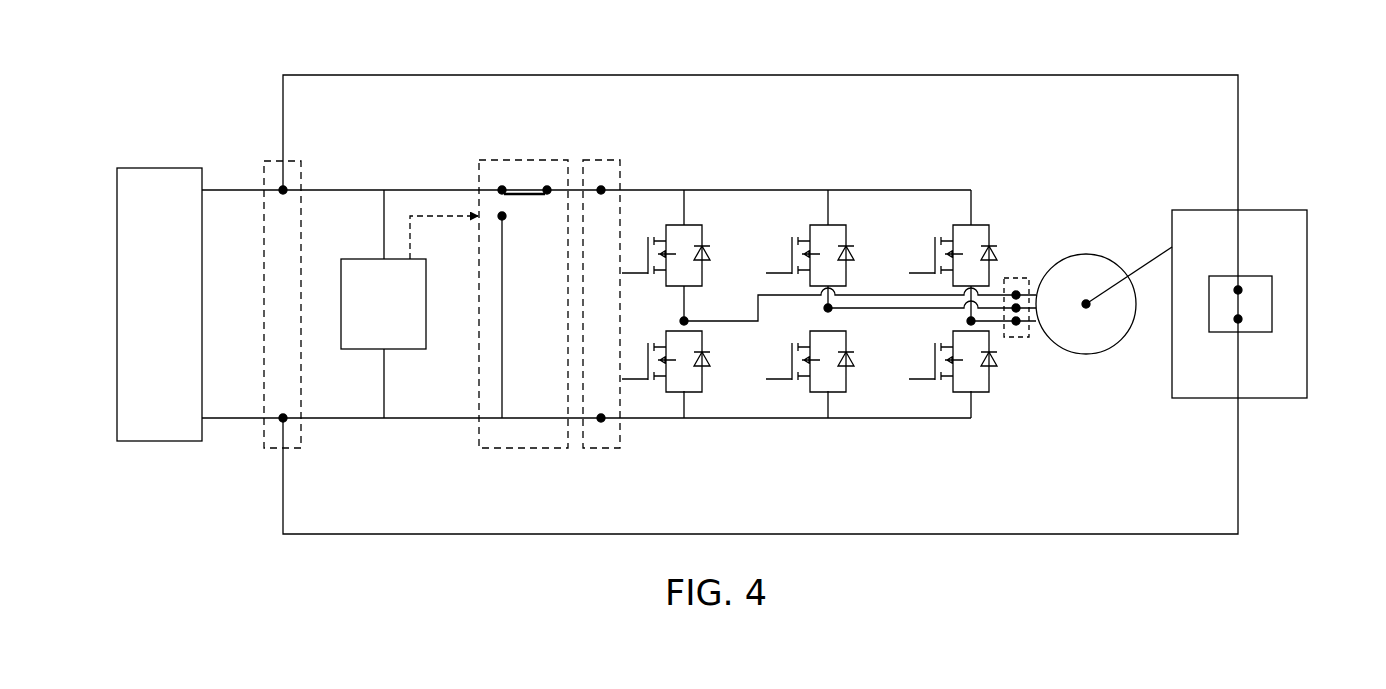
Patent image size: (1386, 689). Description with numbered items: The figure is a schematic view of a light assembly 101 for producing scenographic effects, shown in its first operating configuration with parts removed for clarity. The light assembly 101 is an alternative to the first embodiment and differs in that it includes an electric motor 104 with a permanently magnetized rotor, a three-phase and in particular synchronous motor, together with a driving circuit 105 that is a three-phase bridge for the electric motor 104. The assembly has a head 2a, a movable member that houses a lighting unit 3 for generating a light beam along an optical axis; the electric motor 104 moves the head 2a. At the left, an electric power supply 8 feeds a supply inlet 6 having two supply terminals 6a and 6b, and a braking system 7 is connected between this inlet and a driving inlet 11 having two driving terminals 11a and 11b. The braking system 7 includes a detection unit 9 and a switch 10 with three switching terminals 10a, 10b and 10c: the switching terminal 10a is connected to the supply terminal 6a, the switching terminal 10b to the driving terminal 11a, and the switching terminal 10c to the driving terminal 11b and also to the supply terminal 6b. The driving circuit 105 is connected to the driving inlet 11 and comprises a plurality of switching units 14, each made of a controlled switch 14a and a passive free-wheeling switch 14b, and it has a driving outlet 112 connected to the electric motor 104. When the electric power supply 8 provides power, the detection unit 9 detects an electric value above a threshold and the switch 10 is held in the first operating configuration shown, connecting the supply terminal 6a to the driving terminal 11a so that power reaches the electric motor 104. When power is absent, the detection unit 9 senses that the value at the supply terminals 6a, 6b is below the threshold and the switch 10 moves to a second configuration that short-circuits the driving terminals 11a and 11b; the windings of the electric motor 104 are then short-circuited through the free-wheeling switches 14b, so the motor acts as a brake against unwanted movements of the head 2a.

The light assembly 101 is at (187, 497).
The driving circuit 105 is at (892, 108).
The electric power supply 8 is at (125, 295).
The braking system 7 is at (405, 432).
The supply inlet 6 is at (262, 432).
The supply terminal 6a is at (283, 186).
The supply terminal 6b is at (284, 422).
The detection unit 9 is at (355, 272).
The switch 10 is at (513, 452).
The switching terminal 10a is at (502, 186).
The switching terminal 10b is at (547, 186).
The switching terminal 10c is at (505, 218).
The driving inlet 11 is at (594, 158).
The driving terminal 11a is at (603, 187).
The driving terminal 11b is at (601, 422).
The switching unit 14 is at (697, 208).
The controlled switch 14a is at (640, 245).
The passive free-wheeling switch 14b is at (722, 250).
The driving outlet 112 is at (1016, 277).
The electric motor 104 is at (1101, 250).
The head 2a is at (1300, 248).
The lighting unit 3 is at (1265, 323).